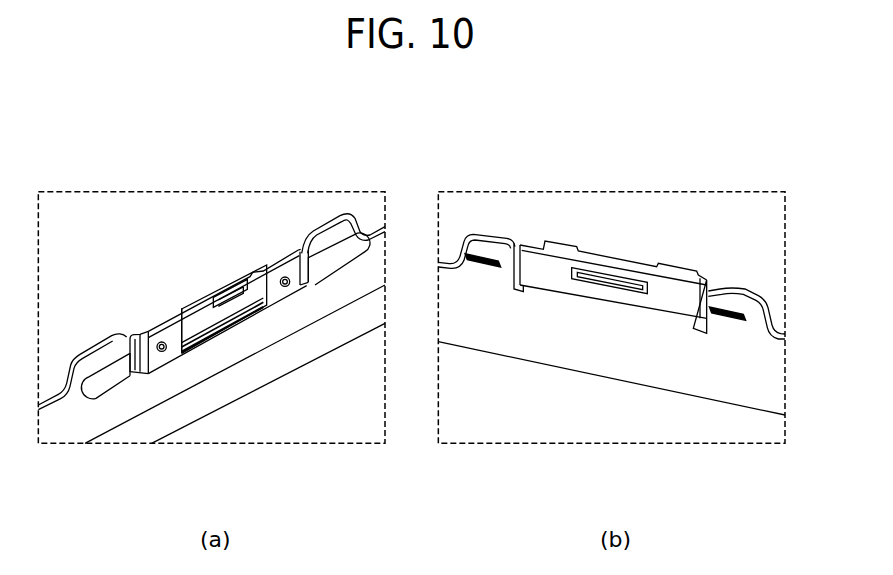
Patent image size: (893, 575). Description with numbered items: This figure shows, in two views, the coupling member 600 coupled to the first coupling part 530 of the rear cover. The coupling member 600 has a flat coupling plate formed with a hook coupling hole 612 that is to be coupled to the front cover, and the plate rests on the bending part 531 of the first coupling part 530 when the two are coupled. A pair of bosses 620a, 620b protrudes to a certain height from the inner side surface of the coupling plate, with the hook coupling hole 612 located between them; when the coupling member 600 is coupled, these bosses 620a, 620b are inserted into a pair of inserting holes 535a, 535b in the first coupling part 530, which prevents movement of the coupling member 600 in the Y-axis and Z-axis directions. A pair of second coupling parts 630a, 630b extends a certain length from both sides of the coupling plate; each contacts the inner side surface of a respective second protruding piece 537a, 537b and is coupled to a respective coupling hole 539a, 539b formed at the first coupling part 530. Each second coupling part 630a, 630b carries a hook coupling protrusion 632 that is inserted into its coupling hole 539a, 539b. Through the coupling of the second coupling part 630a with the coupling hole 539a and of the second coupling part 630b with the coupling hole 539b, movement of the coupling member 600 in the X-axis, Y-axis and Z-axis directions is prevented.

The first coupling part 530 is at (235, 364).
The bending part 531 is at (700, 395).
The inserting hole 535a is at (301, 351).
The inserting hole 535b is at (141, 417).
The second protruding piece 537a is at (335, 191).
The second protruding piece 537b is at (82, 339).
The coupling hole 539a is at (697, 374).
The coupling hole 539b is at (492, 331).
The coupling member 600 is at (214, 309).
The hook coupling hole 612 is at (413, 278).
The boss 620a is at (324, 340).
The boss 620b is at (182, 416).
The second coupling part 630a is at (353, 208).
The second coupling part 630b is at (95, 421).
The hook coupling protrusion 632 is at (611, 247).